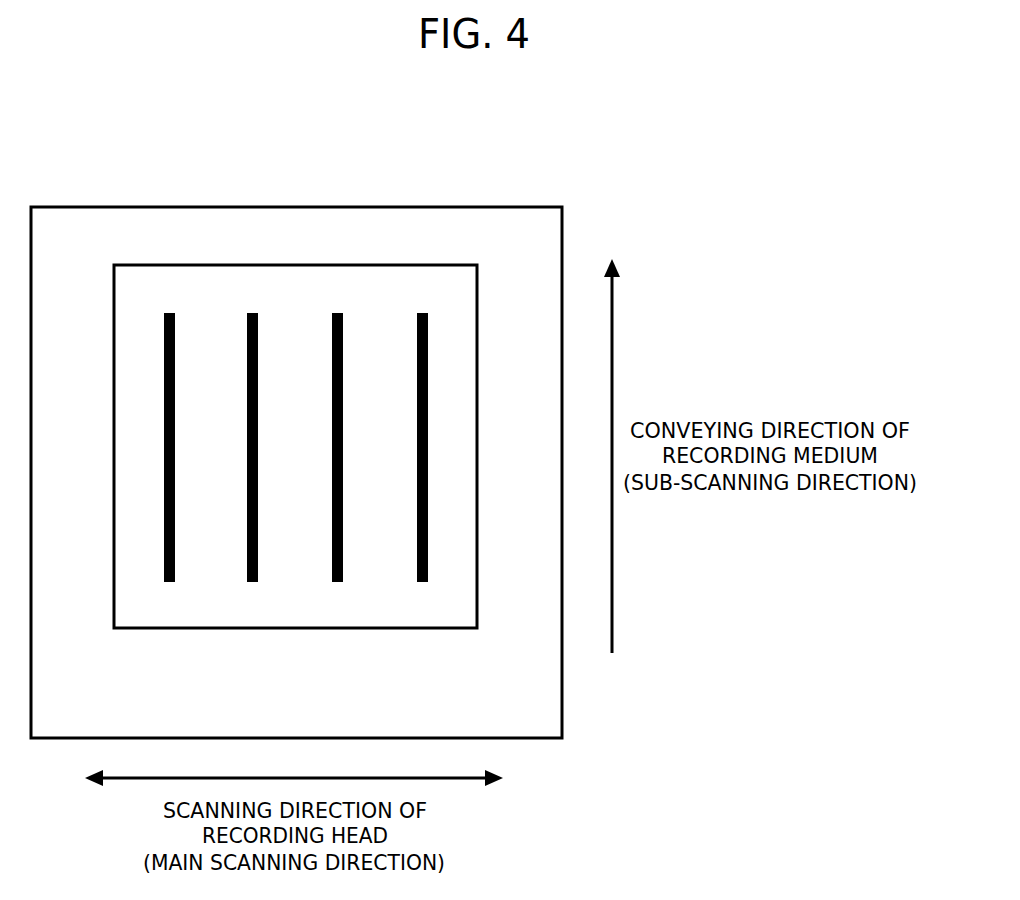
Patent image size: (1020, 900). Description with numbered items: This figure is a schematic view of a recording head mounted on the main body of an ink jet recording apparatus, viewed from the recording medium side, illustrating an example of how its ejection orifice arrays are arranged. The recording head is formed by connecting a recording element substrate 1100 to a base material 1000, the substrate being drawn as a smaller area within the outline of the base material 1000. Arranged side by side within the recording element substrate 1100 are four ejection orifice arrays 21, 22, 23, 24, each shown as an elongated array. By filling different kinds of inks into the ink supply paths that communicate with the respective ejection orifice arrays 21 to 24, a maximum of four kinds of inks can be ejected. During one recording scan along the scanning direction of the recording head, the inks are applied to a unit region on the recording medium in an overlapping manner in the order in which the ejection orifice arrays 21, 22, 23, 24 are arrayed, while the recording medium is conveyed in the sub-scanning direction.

The base material 1000 is at (282, 228).
The recording element substrate 1100 is at (142, 615).
The ejection orifice array 21 is at (171, 432).
The ejection orifice array 22 is at (255, 432).
The ejection orifice array 23 is at (338, 432).
The ejection orifice array 24 is at (423, 432).